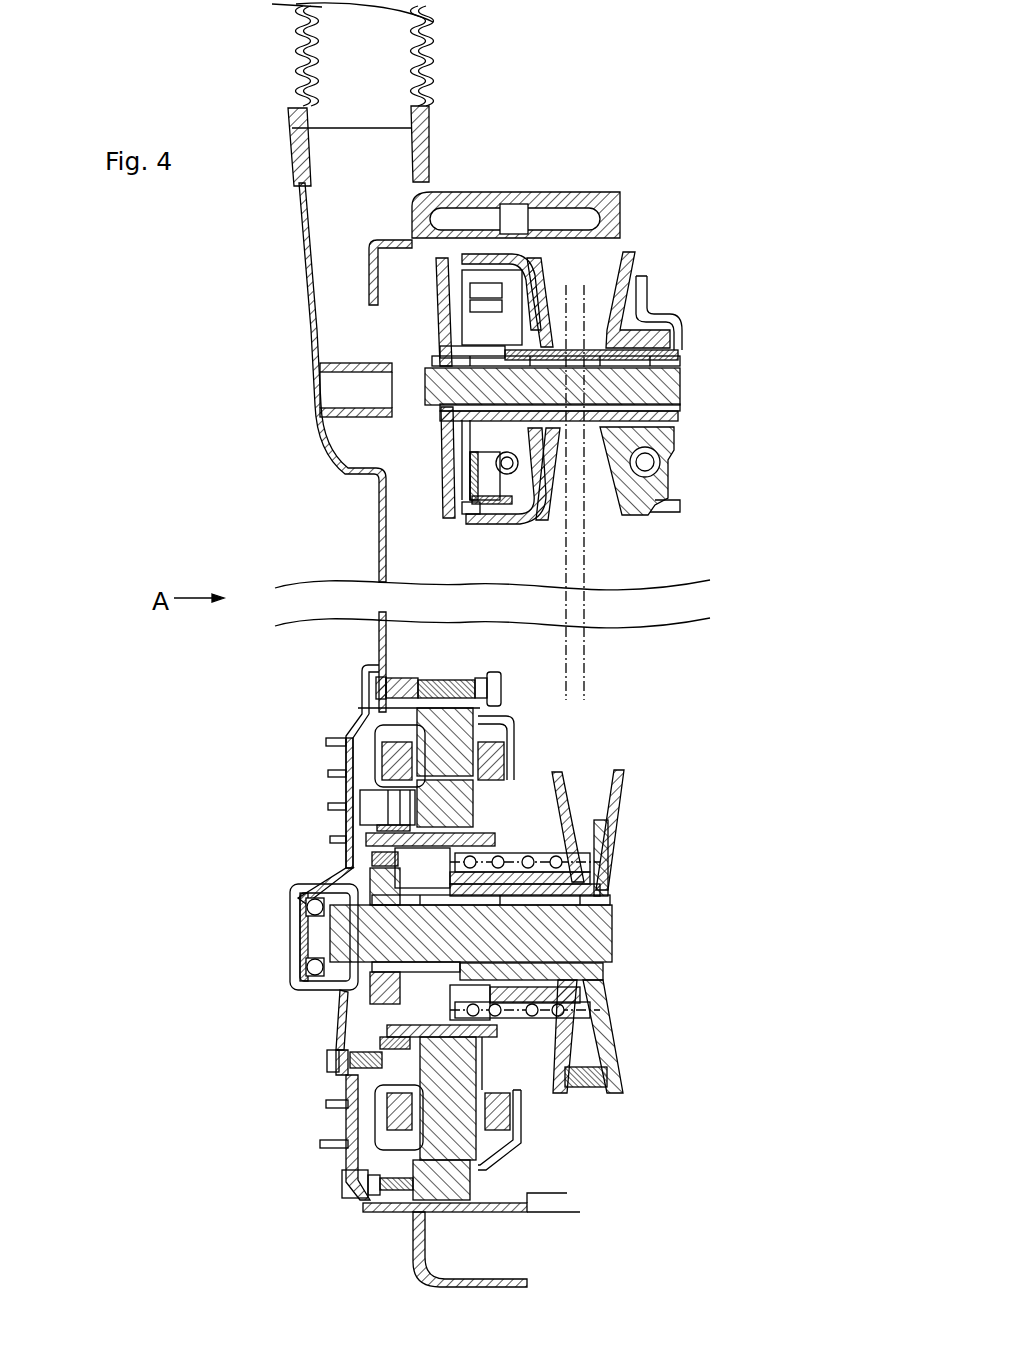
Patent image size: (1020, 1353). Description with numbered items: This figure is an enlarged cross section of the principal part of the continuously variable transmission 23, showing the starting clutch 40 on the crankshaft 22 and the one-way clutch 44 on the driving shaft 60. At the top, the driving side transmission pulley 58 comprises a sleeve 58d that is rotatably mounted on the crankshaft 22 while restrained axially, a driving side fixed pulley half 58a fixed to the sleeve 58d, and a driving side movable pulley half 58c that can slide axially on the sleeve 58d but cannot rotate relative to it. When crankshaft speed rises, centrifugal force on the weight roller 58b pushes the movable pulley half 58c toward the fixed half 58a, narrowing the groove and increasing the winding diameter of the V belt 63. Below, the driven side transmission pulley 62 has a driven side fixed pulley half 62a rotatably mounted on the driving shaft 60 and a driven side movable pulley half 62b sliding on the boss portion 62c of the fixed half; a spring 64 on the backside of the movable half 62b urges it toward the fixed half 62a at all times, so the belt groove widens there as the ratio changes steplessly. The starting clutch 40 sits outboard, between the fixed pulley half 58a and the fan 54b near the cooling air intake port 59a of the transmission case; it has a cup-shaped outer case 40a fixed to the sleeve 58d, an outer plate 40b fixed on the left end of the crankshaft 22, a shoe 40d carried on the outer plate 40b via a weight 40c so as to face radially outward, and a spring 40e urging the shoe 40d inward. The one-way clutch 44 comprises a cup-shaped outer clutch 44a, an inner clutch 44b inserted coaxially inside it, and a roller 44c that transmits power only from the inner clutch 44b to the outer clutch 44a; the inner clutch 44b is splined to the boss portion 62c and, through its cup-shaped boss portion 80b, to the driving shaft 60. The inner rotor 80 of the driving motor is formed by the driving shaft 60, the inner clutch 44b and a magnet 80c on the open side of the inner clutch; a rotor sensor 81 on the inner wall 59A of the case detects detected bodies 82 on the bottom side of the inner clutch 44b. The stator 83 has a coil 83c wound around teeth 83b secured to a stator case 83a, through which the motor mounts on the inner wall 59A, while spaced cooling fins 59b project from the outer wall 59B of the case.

The crankshaft 22 is at (678, 396).
The continuously variable transmission 23 is at (604, 572).
The starting clutch 40 is at (484, 240).
The outer case 40a is at (520, 512).
The outer plate 40b is at (443, 434).
The weight 40c is at (469, 516).
The shoe 40d is at (508, 508).
The spring 40e is at (556, 500).
The one-way clutch 44 is at (210, 838).
The outer clutch 44a is at (350, 849).
The inner clutch 44b is at (332, 906).
The roller 44c is at (340, 880).
The fan 54b is at (404, 306).
The driving side transmission pulley 58 is at (640, 346).
The driving side fixed pulley half 58a is at (542, 270).
The weight roller 58b is at (652, 463).
The driving side movable pulley half 58c is at (640, 262).
The sleeve 58d is at (682, 372).
The cooling air intake port 59a is at (357, 138).
The inner wall 59A is at (352, 730).
The outer wall 59B is at (350, 1086).
The cooling fins 59b is at (328, 742).
The driving shaft 60 is at (606, 934).
The driven side transmission pulley 62 is at (581, 794).
The driven side fixed pulley half 62a is at (625, 776).
The driven side movable pulley half 62b is at (556, 776).
The boss portion 62c is at (574, 890).
The V belt 63 is at (600, 654).
The spring 64 is at (522, 856).
The inner rotor 80 is at (340, 980).
The boss portion 80b is at (350, 998).
The magnet 80c is at (476, 1060).
The rotor sensor 81 is at (346, 800).
The detected bodies 82 is at (352, 824).
The stator 83 is at (461, 1231).
The stator case 83a is at (478, 1212).
The teeth 83b is at (424, 1245).
The coil 83c is at (520, 1124).